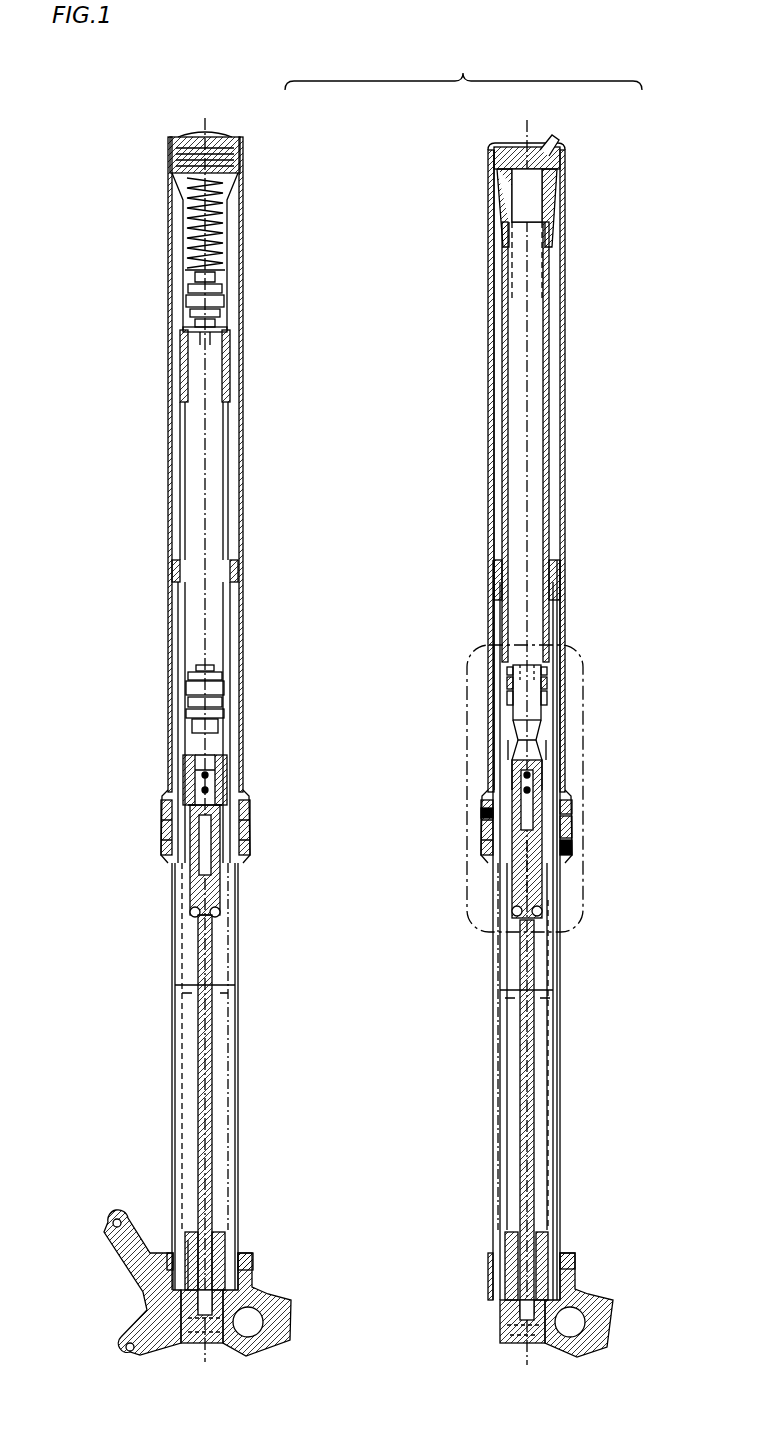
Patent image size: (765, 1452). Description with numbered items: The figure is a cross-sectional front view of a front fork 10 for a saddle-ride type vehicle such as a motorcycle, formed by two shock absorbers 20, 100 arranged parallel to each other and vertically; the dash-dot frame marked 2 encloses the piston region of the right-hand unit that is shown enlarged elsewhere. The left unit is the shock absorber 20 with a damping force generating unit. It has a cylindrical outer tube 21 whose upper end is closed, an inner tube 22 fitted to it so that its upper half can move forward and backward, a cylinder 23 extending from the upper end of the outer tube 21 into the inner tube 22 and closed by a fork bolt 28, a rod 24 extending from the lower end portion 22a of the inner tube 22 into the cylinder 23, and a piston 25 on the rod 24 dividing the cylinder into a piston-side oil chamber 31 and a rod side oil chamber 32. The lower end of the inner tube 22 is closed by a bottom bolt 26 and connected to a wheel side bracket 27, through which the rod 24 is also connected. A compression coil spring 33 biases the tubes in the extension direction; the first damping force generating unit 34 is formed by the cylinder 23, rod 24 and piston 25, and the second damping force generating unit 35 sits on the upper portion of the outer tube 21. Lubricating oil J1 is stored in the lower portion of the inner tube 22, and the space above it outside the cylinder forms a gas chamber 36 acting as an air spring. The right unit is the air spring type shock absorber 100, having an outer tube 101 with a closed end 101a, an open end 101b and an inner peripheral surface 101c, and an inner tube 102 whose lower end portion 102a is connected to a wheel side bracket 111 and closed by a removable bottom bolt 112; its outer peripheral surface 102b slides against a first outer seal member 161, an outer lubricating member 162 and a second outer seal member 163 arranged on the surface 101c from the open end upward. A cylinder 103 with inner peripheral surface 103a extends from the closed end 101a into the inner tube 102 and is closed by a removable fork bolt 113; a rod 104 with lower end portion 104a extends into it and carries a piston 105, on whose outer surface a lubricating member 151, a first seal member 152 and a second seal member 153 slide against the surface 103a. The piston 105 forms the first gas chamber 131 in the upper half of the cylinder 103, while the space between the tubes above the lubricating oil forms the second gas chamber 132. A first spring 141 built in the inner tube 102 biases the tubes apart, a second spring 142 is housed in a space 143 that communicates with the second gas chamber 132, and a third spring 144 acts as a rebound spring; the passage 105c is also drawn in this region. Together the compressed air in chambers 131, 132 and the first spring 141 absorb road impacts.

The front fork 10 is at (463, 68).
The shock absorber with damping force generating unit 20 is at (252, 157).
The outer tube 21 is at (166, 410).
The inner tube 22 is at (170, 935).
The lower end portion of inner tube 22a is at (176, 1283).
The cylinder 23 is at (180, 492).
The rod 24 is at (204, 1053).
The piston 25 is at (190, 690).
The bottom bolt 26 is at (196, 1318).
The wheel side bracket 27 is at (166, 1333).
The fork bolt 28 is at (200, 140).
The piston-side oil chamber 31 is at (215, 636).
The rod side oil chamber 32 is at (214, 750).
The compression coil spring 33 is at (193, 1138).
The first damping force generating unit 34 is at (176, 746).
The second damping force generating unit 35 is at (188, 275).
The gas chamber 36 is at (222, 947).
The lubricating oil J1 is at (224, 993).
The air spring type shock absorber 100 is at (574, 157).
The outer tube 101 is at (486, 347).
The closed end 101a is at (498, 192).
The open end 101b is at (488, 836).
The inner peripheral surface of outer tube 101c is at (498, 394).
The inner tube 102 is at (491, 1040).
The lower end portion of inner tube 102a is at (496, 1280).
The outer peripheral surface of inner tube 102b is at (491, 1085).
The cylinder 103 is at (502, 478).
The inner peripheral surface of cylinder 103a is at (520, 520).
The rod 104 is at (524, 1140).
The lower end portion of rod 104a is at (513, 1318).
The piston 105 is at (523, 664).
The piston passage 105c is at (518, 674).
The wheel side bracket 111 is at (592, 1305).
The bottom bolt 112 is at (521, 1340).
The fork bolt 113 is at (523, 150).
The first gas chamber 131 is at (535, 602).
The second gas chamber 132 is at (543, 951).
The first spring 141 is at (541, 1108).
The second spring 142 is at (546, 743).
The space 143 is at (515, 737).
The third spring 144 is at (536, 897).
The lubricating member 151 is at (549, 677).
The first seal member 152 is at (548, 690).
The second seal member 153 is at (548, 703).
The first outer seal member 161 is at (566, 862).
The outer lubricating member 162 is at (570, 848).
The second outer seal member 163 is at (568, 836).
The damper unit (enlarged in FIG. 2) 2 is at (476, 930).